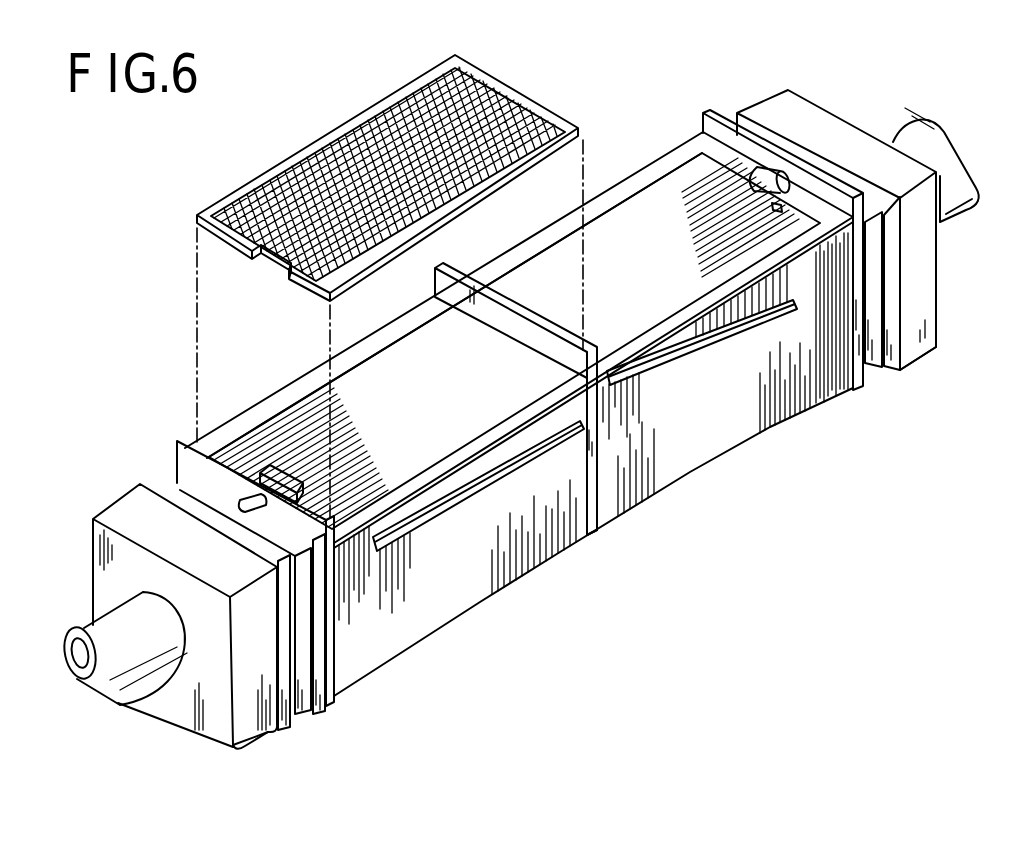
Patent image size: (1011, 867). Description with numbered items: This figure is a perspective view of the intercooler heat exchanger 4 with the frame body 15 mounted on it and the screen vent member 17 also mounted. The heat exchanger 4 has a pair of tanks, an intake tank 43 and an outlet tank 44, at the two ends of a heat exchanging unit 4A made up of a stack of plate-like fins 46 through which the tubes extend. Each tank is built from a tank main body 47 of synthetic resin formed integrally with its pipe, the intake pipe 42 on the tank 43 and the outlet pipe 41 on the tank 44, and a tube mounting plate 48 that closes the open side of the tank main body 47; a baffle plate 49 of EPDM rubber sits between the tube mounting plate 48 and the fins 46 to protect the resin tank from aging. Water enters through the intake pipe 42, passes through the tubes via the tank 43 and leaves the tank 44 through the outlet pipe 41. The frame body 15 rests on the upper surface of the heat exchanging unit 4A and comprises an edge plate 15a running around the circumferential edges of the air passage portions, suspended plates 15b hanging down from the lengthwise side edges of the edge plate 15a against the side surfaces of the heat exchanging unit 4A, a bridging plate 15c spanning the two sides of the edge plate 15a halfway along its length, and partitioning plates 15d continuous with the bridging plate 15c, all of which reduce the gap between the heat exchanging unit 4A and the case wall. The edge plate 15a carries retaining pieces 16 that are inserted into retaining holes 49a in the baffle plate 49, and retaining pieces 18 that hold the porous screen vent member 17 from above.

The heat exchanger 4 is at (797, 420).
The heat exchanging unit 4A is at (707, 452).
The frame body 15 is at (525, 385).
The edge plate 15a is at (577, 192).
The suspended plate 15b is at (720, 334).
The bridging plate 15c is at (536, 306).
The partitioning plate 15d is at (603, 540).
The retaining piece 16 is at (790, 162).
The screen vent member 17 is at (522, 96).
The retaining piece 18 is at (298, 468).
The outlet pipe 41 is at (952, 216).
The intake pipe 42 is at (128, 683).
The intake tank 43 is at (114, 497).
The outlet tank 44 is at (763, 100).
The fin 46 is at (630, 482).
The tank main body 47 is at (933, 346).
The tube mounting plate 48 is at (903, 372).
The baffle plate 49 is at (868, 390).
The retaining hole 49a is at (762, 166).